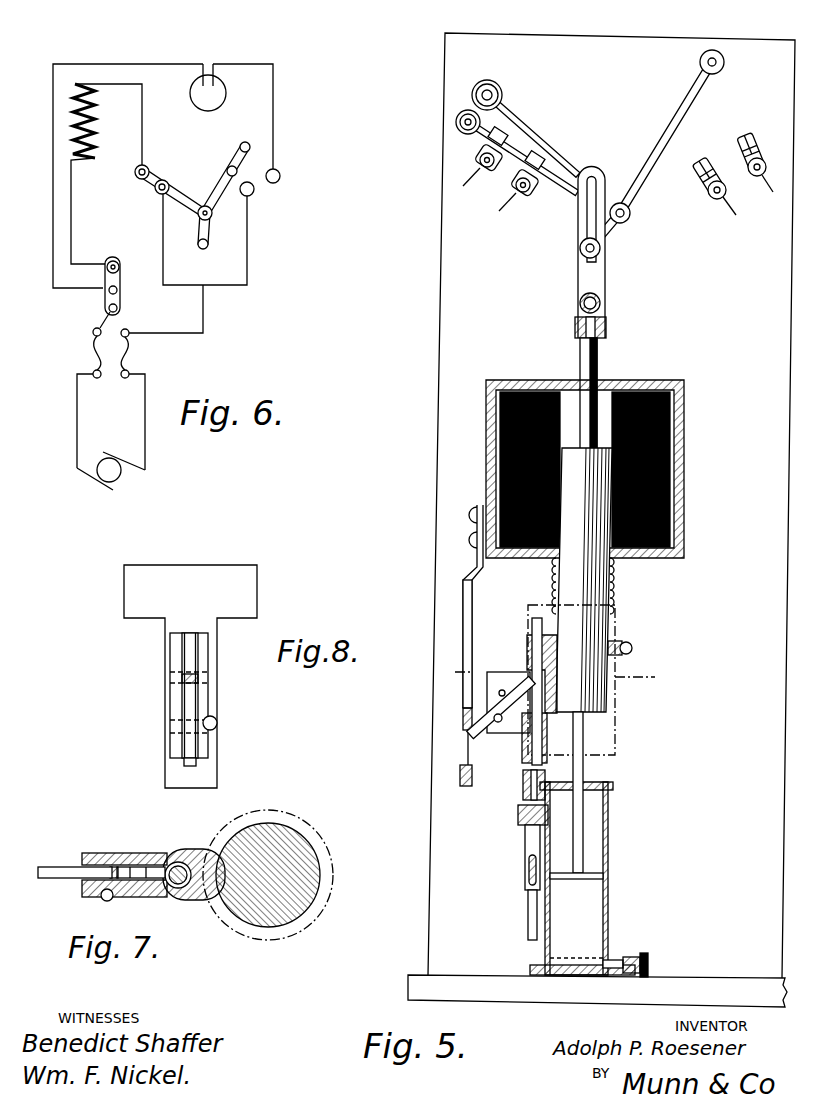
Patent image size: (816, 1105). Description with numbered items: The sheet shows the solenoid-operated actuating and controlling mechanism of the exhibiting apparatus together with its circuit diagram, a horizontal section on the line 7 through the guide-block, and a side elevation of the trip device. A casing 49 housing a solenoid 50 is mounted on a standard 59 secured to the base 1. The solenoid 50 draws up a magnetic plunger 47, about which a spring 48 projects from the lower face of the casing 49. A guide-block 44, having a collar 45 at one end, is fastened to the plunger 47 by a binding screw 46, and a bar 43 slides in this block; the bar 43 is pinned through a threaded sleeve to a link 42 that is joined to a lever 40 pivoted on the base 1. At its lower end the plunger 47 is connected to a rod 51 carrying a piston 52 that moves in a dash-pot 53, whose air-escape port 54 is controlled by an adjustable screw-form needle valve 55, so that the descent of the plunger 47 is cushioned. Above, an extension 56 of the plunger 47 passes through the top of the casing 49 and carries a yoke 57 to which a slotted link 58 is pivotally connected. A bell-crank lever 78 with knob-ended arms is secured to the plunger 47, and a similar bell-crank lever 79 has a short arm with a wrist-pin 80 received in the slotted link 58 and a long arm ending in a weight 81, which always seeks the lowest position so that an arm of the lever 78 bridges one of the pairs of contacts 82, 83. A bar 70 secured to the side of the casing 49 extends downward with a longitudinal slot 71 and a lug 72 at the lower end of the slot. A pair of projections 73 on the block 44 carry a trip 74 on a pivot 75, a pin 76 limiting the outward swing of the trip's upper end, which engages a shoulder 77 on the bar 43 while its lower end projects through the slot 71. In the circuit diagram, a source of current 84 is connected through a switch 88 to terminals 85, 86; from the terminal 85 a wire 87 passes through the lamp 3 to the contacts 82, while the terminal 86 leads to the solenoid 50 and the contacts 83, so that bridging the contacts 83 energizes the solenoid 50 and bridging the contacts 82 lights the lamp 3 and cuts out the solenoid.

In FIG. 5, the base 1 is at (700, 978).
In FIG. 6, the lamp 3 is at (220, 104).
In FIG. 5, the section line 7— 7 is at (557, 680).
In FIG. 5, the lever 40 is at (528, 915).
In FIG. 5, the link 42 is at (533, 847).
In FIG. 7, the bar 43 is at (178, 861).
In FIG. 5, the bar 43 is at (543, 749).
In FIG. 8, the guide-block 44 is at (173, 622).
In FIG. 7, the guide-block 44 is at (193, 902).
In FIG. 5, the guide-block 44 is at (526, 651).
In FIG. 8, the collar 45 is at (258, 607).
In FIG. 5, the collar 45 is at (624, 642).
In FIG. 5, the binding screw 46 is at (633, 650).
In FIG. 7, the magnetic plunger 47 is at (312, 902).
In FIG. 5, the magnetic plunger 47 is at (612, 628).
In FIG. 5, the spring 48 is at (550, 580).
In FIG. 5, the casing 49 is at (684, 507).
In FIG. 6, the solenoid 50 is at (91, 135).
In FIG. 5, the solenoid 50 is at (648, 380).
In FIG. 5, the rod 51 is at (583, 832).
In FIG. 5, the piston 52 is at (582, 883).
In FIG. 5, the dash-pot 53 is at (606, 915).
In FIG. 5, the air-escape port 54 is at (607, 962).
In FIG. 5, the needle valve 55 is at (648, 962).
In FIG. 5, the extension 56 is at (598, 372).
In FIG. 5, the yoke 57 is at (607, 328).
In FIG. 5, the slotted link 58 is at (585, 275).
In FIG. 5, the standard 59 is at (611, 505).
In FIG. 5, the bar 70 is at (465, 625).
In FIG. 5, the longitudinal slot 71 is at (467, 755).
In FIG. 5, the projection or lug 72 is at (527, 671).
In FIG. 8, the projections 73 is at (210, 707).
In FIG. 7, the projections 73 is at (140, 893).
In FIG. 5, the projections 73 is at (516, 737).
In FIG. 8, the trip 74 is at (184, 763).
In FIG. 7, the trip 74 is at (58, 880).
In FIG. 5, the trip 74 is at (473, 738).
In FIG. 8, the pivot 75 is at (218, 727).
In FIG. 7, the pivot 75 is at (104, 901).
In FIG. 5, the pivot 75 is at (513, 714).
In FIG. 8, the pin 76 is at (182, 690).
In FIG. 7, the pin 76 is at (115, 866).
In FIG. 5, the pin 76 is at (500, 674).
In FIG. 5, the shoulder 77 is at (512, 714).
In FIG. 6, the bell-crank lever 78 is at (189, 193).
In FIG. 5, the bell-crank lever 78 is at (572, 178).
In FIG. 6, the bell-crank lever 79 is at (210, 238).
In FIG. 5, the bell-crank lever 79 is at (612, 228).
In FIG. 5, the wrist-pin 80 is at (578, 246).
In FIG. 5, the weight 81 is at (503, 97).
In FIG. 6, the contacts 82 is at (278, 183).
In FIG. 5, the contacts 82 is at (736, 143).
In FIG. 6, the contacts 83 is at (164, 184).
In FIG. 5, the contacts 83 is at (518, 193).
In FIG. 6, the source of current 84 is at (122, 478).
In FIG. 6, the terminal 85 is at (122, 292).
In FIG. 6, the terminal 86 is at (117, 262).
In FIG. 6, the wire 87 is at (206, 325).
In FIG. 6, the switch 88 is at (104, 311).